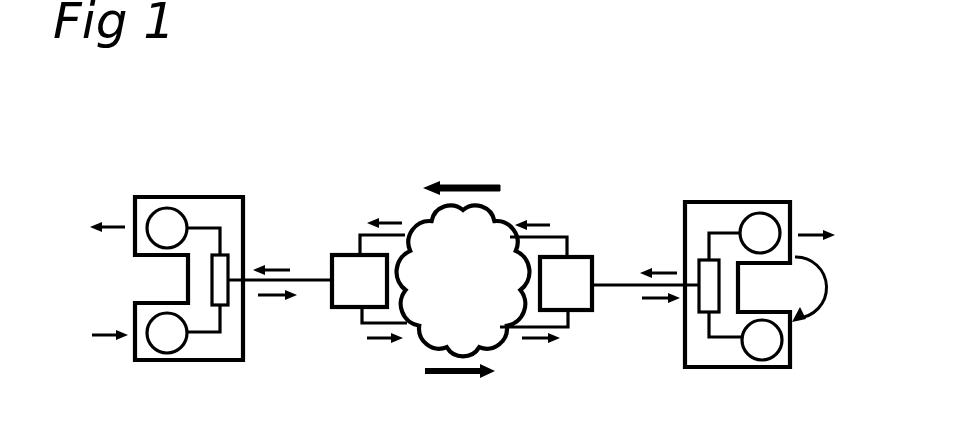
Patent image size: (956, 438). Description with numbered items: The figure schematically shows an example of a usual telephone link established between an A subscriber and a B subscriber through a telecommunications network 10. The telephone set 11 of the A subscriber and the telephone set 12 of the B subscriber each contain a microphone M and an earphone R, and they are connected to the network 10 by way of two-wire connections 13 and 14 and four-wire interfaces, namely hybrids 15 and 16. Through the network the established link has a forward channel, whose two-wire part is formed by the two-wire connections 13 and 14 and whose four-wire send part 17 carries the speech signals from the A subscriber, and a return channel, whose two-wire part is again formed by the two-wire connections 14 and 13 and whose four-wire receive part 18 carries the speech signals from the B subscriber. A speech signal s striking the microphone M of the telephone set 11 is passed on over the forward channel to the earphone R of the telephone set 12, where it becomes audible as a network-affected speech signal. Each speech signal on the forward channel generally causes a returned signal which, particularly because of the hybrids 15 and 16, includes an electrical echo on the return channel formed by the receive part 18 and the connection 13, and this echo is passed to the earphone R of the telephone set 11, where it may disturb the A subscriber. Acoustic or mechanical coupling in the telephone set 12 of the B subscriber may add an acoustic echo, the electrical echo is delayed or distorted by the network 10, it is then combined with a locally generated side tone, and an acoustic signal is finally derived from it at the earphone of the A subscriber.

The telecommunications network 10 is at (473, 300).
The telephone set of the A subscriber 11 is at (222, 363).
The telephone set of the B subscriber 12 is at (710, 370).
The two-wire connection 13 is at (313, 282).
The two-wire connection 14 is at (613, 287).
The hybrid 15 is at (330, 258).
The hybrid 16 is at (595, 260).
The four-wire send part 17 is at (362, 325).
The four-wire receive part 18 is at (362, 233).